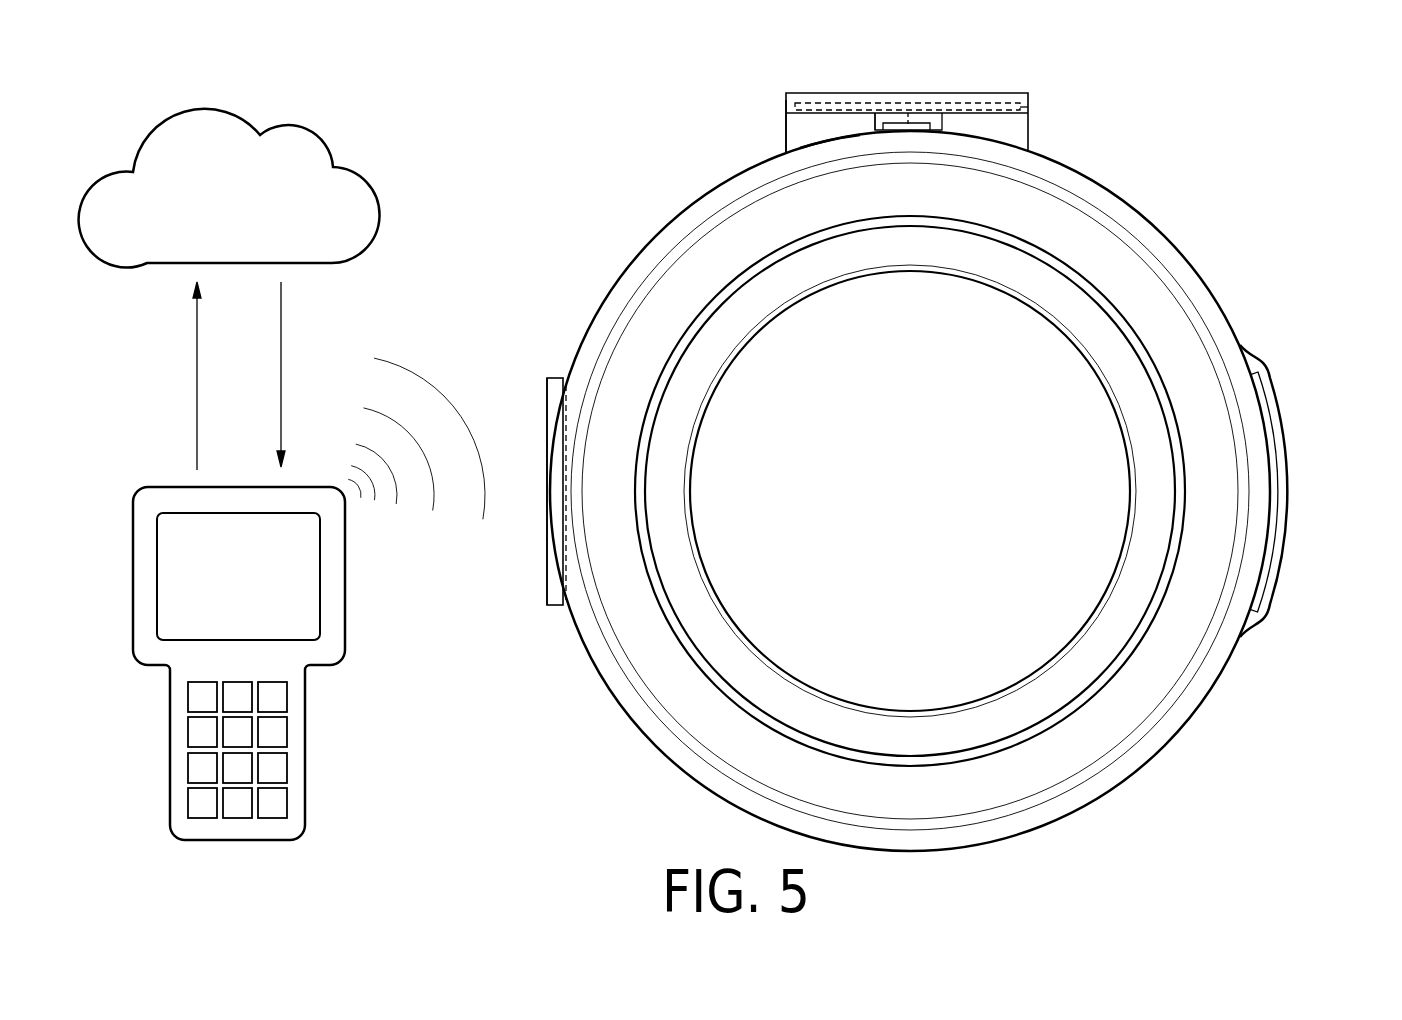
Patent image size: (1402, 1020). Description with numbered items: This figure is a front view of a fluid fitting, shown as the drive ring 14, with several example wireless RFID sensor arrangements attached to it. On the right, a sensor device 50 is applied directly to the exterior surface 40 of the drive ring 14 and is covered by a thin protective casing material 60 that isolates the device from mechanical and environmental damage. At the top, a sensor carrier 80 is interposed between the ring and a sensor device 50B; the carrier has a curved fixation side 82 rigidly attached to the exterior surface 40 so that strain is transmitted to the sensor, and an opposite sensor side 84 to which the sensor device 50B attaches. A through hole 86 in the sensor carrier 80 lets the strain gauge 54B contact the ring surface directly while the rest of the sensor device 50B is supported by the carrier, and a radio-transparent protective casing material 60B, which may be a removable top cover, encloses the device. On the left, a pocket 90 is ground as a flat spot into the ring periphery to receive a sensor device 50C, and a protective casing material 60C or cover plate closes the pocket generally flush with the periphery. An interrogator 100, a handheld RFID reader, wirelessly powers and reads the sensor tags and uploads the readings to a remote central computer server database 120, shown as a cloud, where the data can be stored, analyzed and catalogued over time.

The drive ring 14 is at (1150, 743).
The exterior surface 40 is at (1217, 296).
The sensor device 50 is at (1265, 425).
The protective casing material 60 is at (1288, 481).
The sensor carrier 80 is at (1018, 128).
The fixation side 82 is at (831, 140).
The sensor side 84 is at (772, 113).
The through hole 86 is at (852, 119).
The pocket 90 is at (580, 392).
The interrogator 100 is at (307, 787).
The remote central computer server database 120 is at (295, 129).
The sensor device 50B is at (1028, 107).
The strain gauge 54B is at (928, 113).
The protective casing material 60B is at (787, 93).
The sensor device 50C is at (553, 377).
The protective casing material 60C is at (547, 391).